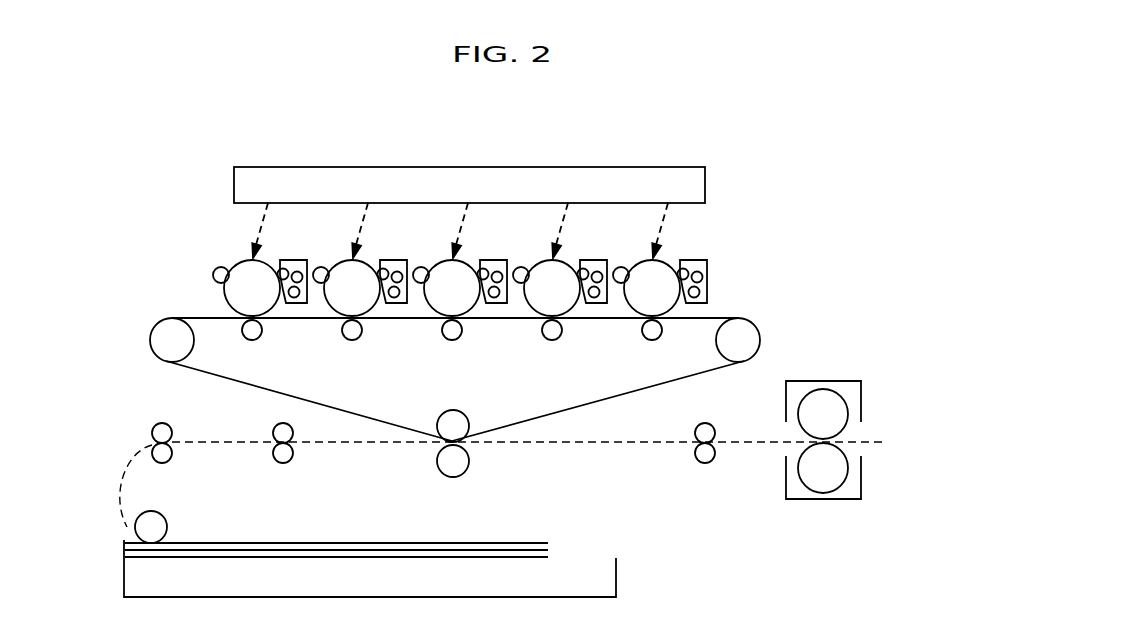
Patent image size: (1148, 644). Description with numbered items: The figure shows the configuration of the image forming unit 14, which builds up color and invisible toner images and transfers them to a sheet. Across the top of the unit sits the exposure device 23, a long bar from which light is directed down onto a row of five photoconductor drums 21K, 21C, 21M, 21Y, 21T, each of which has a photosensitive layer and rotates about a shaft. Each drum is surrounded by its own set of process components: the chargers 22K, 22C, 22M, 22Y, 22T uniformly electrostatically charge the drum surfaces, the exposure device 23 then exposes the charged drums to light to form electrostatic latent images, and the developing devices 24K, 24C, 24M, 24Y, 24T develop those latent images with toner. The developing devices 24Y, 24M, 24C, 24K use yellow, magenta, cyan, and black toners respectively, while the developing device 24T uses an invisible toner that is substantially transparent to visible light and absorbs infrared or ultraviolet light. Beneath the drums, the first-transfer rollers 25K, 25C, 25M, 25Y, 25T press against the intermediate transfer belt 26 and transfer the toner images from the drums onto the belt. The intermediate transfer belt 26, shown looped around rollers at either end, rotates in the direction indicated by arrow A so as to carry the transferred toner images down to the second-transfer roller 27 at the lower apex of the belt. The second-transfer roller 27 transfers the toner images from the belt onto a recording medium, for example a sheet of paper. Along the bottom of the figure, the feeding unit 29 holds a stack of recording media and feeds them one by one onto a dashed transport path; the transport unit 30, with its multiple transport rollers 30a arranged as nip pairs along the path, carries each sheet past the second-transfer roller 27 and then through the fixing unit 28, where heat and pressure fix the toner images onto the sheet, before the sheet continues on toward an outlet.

The image forming unit 14 is at (818, 120).
The exposure device 23 is at (707, 192).
The photoconductor drum 21K is at (263, 257).
The photoconductor drum 21C is at (363, 257).
The photoconductor drum 21M is at (463, 257).
The photoconductor drum 21Y is at (563, 257).
The photoconductor drum 21T is at (663, 257).
The charger 22K is at (222, 266).
The charger 22C is at (322, 266).
The charger 22M is at (422, 266).
The charger 22Y is at (522, 266).
The charger 22T is at (622, 266).
The developing device 24K is at (297, 305).
The developing device 24C is at (397, 305).
The developing device 24M is at (497, 305).
The developing device 24Y is at (597, 305).
The developing device 24T is at (697, 305).
The first-transfer roller 25K is at (252, 341).
The first-transfer roller 25C is at (352, 341).
The first-transfer roller 25M is at (452, 341).
The first-transfer roller 25Y is at (552, 341).
The first-transfer roller 25T is at (652, 341).
The intermediate transfer belt 26 is at (645, 390).
The second-transfer roller 27 is at (455, 478).
The fixing unit 28 is at (797, 380).
The feeding unit 29 is at (617, 562).
The transport unit 30 is at (869, 437).
The transport rollers 30a is at (172, 462).
The arrow A is at (145, 361).